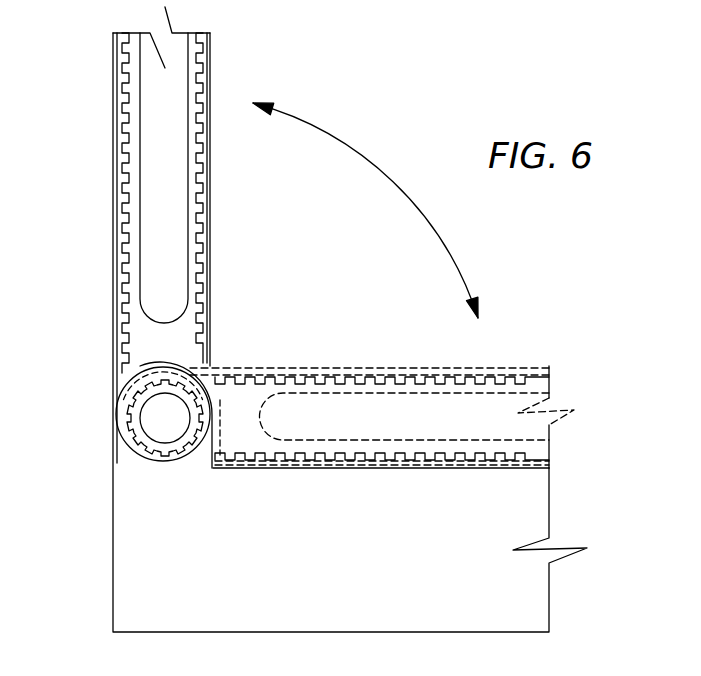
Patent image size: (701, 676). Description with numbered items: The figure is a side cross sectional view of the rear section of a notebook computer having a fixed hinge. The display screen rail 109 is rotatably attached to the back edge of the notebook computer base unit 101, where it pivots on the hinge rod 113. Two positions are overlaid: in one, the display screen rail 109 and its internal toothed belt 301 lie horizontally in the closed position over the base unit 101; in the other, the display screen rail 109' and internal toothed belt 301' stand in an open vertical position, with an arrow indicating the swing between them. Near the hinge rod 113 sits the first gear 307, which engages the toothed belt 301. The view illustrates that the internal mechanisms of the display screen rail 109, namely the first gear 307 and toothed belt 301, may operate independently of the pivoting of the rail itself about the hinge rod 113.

The notebook computer base unit 101 is at (492, 593).
The display screen rail 109 is at (382, 390).
The display screen rail 109' is at (141, 237).
The hinge rod 113 is at (165, 418).
The internal toothed belt 301 is at (382, 391).
The internal toothed belt 301' is at (132, 203).
The first gear 307 is at (138, 438).